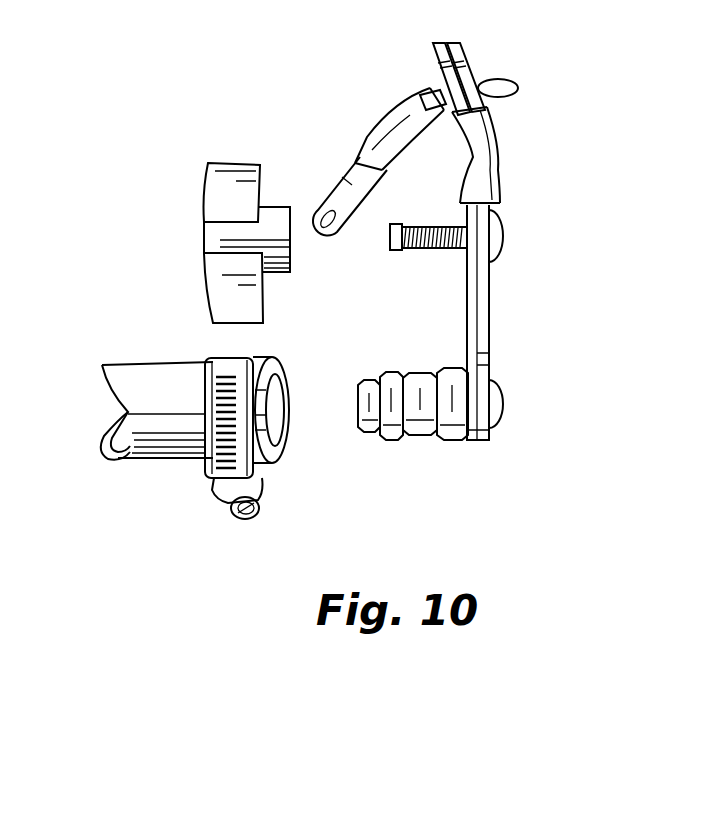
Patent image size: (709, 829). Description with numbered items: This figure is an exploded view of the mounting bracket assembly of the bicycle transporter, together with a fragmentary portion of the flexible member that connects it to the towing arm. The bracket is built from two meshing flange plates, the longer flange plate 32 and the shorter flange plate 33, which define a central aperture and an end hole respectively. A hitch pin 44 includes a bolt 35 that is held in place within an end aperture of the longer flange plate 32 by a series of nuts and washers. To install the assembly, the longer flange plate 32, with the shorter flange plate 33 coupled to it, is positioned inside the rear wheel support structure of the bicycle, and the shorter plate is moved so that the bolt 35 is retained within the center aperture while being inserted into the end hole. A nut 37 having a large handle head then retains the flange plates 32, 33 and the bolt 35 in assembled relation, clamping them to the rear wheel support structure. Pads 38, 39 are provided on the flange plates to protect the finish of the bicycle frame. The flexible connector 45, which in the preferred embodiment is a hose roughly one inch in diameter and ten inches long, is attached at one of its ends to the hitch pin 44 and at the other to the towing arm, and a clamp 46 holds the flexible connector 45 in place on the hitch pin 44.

The longer flange plate 32 is at (483, 318).
The shorter flange plate 33 is at (348, 173).
The bolt 35 is at (412, 250).
The nut 37 is at (208, 237).
The pad 38 is at (493, 153).
The pad 39 is at (400, 118).
The hitch pin 44 is at (420, 425).
The flexible connector 45 is at (168, 415).
The clamp 46 is at (253, 517).